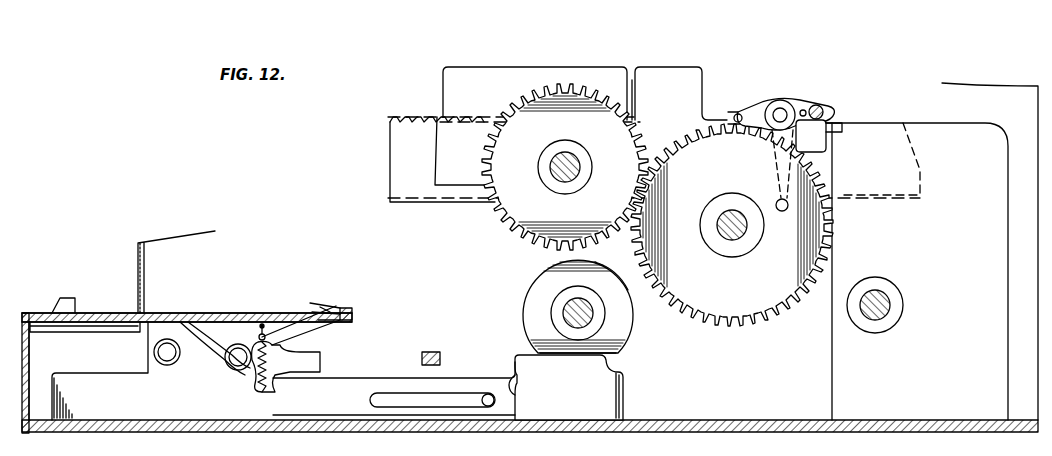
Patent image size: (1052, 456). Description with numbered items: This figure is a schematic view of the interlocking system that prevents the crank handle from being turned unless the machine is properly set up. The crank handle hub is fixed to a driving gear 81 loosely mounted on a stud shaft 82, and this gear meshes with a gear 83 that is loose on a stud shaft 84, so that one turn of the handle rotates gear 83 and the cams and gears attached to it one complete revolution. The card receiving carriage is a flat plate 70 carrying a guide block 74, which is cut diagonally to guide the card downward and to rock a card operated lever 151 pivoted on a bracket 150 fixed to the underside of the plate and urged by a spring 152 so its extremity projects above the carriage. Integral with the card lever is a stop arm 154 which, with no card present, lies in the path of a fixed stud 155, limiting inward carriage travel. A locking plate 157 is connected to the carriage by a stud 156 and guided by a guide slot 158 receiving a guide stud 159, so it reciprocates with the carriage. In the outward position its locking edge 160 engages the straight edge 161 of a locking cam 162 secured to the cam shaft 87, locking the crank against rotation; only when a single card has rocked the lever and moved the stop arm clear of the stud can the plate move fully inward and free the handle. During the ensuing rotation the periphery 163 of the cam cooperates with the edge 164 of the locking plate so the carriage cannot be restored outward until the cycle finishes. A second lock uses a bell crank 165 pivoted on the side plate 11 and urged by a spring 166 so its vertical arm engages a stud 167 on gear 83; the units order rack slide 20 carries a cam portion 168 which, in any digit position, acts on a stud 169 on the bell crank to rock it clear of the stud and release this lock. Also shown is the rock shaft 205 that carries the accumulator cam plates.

The side plate 11 is at (683, 72).
The units order rack slide 20 is at (390, 163).
The card carriage plate 70 is at (165, 320).
The guide block 74 is at (343, 305).
The driving gear 81 is at (558, 90).
The stud shaft 82 is at (556, 170).
The gear 83 is at (808, 225).
The stud shaft 84 is at (733, 242).
The cam shaft 87 is at (590, 321).
The bracket 150 is at (190, 350).
The card operated lever 151 is at (305, 330).
The spring 152 is at (254, 380).
The stop arm 154 is at (320, 364).
The fixed stud 155 is at (452, 344).
The stud 156 is at (154, 352).
The locking plate 157 is at (394, 389).
The guide slot 158 is at (456, 392).
The guide stud 159 is at (484, 404).
The locking edge 160 is at (618, 370).
The straight edge 161 is at (567, 350).
The locking cam 162 is at (538, 292).
The periphery 163 is at (604, 272).
The edge 164 is at (529, 390).
The bell crank 165 is at (826, 140).
The spring 166 is at (758, 102).
The stud 167 is at (781, 212).
The cam portion 168 is at (795, 100).
The stud 169 is at (830, 112).
The rock shaft 205 is at (886, 300).